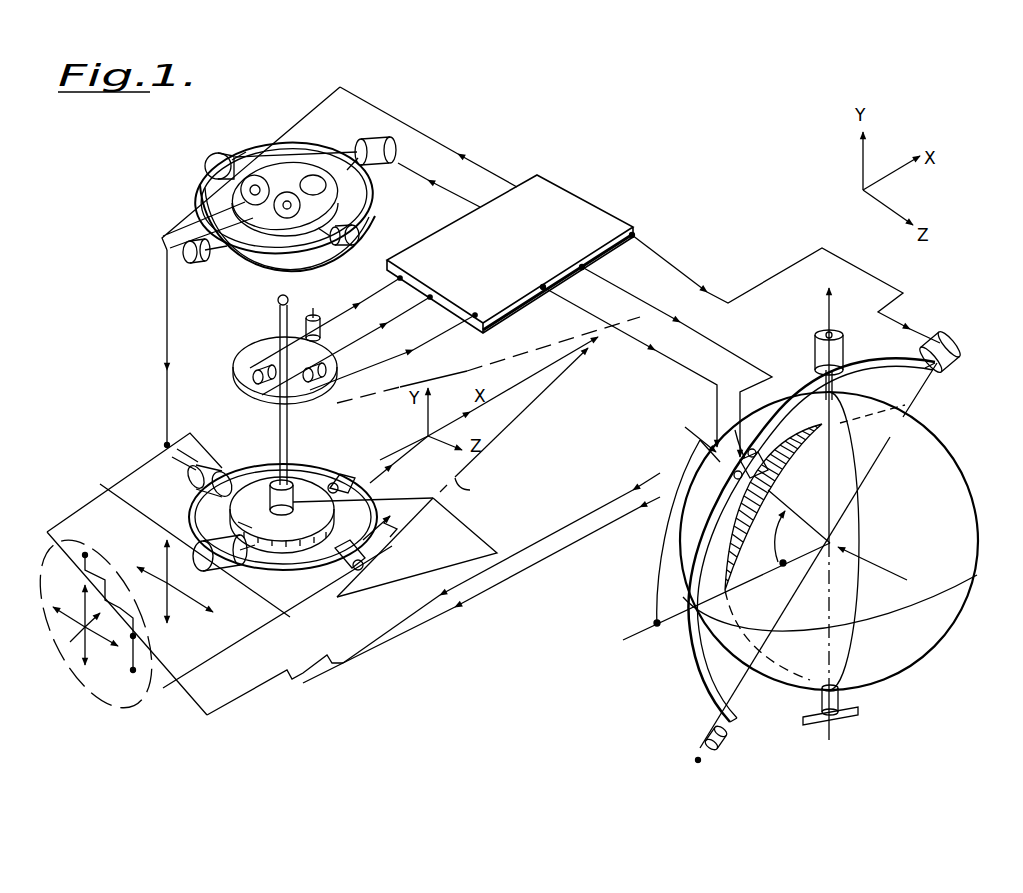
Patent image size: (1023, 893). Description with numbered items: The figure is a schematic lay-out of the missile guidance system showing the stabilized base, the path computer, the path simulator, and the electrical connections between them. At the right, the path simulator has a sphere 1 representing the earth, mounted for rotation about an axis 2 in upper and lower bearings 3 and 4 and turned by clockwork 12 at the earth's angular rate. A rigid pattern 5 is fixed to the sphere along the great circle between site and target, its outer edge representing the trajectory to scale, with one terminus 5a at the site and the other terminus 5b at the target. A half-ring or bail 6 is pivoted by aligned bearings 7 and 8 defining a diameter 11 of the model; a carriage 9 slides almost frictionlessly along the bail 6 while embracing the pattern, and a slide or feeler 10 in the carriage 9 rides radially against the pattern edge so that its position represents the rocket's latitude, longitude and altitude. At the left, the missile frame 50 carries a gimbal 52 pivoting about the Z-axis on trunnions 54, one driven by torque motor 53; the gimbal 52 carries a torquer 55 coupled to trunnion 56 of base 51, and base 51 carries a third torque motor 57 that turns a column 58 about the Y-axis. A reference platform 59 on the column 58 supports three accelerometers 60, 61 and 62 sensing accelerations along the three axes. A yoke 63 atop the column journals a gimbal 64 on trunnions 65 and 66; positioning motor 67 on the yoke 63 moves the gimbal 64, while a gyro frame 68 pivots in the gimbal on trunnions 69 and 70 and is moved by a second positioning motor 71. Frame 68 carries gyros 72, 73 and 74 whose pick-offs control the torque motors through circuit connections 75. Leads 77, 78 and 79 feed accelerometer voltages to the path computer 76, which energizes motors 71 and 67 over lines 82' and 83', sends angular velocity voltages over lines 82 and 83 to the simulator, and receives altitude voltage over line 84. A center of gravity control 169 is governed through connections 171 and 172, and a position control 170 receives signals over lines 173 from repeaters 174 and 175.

The sphere 1 is at (966, 533).
The axis 2 is at (832, 511).
The upper bearing 3 is at (826, 377).
The lower bearing 4 is at (822, 707).
The pattern 5 is at (782, 462).
The terminus of pattern 5a is at (750, 578).
The terminus of pattern 5b is at (862, 410).
The half-ring or bail 6 is at (688, 669).
The bearing 7 is at (935, 373).
The bearing 8 is at (722, 747).
The carriage 9 is at (730, 480).
The slide or feeler 10 is at (740, 455).
The diameter 11 is at (807, 570).
The clockwork 12 is at (815, 351).
The missile frame or casing 50 is at (462, 472).
The base 51 is at (283, 546).
The gimbal 52 is at (322, 566).
The torque motor 53 is at (190, 483).
The trunnion 54 is at (176, 460).
The torque motor or torquer 55 is at (215, 560).
The trunnion 56 is at (238, 527).
The third torque motor 57 is at (270, 505).
The column or support 58 is at (289, 444).
The reference platform 59 is at (268, 396).
The accelerometer 60 is at (250, 378).
The accelerometer 61 is at (322, 329).
The accelerometer 62 is at (327, 369).
The yoke 63 is at (232, 312).
The gimbal 64 is at (308, 152).
The trunnion 65 is at (222, 252).
The trunnion 66 is at (352, 162).
The positioning motor 67 is at (398, 152).
The gyro frame 68 is at (335, 193).
The trunnion 69 is at (324, 245).
The trunnion 70 is at (240, 158).
The second positioning motor 71 is at (205, 160).
The gyro 72 is at (298, 206).
The gyro 73 is at (264, 186).
The gyro 74 is at (326, 186).
The circuit connections 75 is at (163, 299).
The path computer 76 is at (573, 203).
The lead 77 is at (372, 303).
The lead 78 is at (402, 320).
The lead 79 is at (430, 340).
The line 82 is at (676, 361).
The line 82' is at (428, 137).
The line 83 is at (785, 288).
The line 83' is at (439, 193).
The line 84 is at (612, 325).
The center of gravity control 169 is at (148, 604).
The position control 170 is at (80, 612).
The connection 171 is at (540, 540).
The connection 172 is at (483, 593).
The lines 173 is at (458, 540).
The repeater 174 is at (345, 478).
The repeater 175 is at (354, 570).